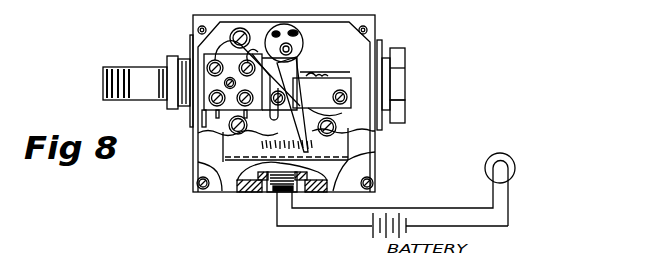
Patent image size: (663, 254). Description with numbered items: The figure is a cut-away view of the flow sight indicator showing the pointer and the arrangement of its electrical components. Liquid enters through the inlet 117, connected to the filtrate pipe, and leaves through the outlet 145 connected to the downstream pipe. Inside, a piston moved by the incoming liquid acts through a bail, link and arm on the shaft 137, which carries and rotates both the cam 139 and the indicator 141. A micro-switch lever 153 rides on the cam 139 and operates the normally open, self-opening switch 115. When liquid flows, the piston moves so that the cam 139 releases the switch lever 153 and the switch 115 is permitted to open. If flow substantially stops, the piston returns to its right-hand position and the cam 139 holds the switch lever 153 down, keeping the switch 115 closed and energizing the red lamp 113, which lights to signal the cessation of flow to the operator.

The red lamp 113 is at (510, 158).
The switch 115 is at (348, 86).
The inlet 117 is at (405, 117).
The shaft 137 is at (294, 30).
The cam 139 is at (303, 62).
The indicator 141 is at (296, 90).
The outlet 145 is at (143, 97).
The micro-switch lever 153 is at (325, 77).